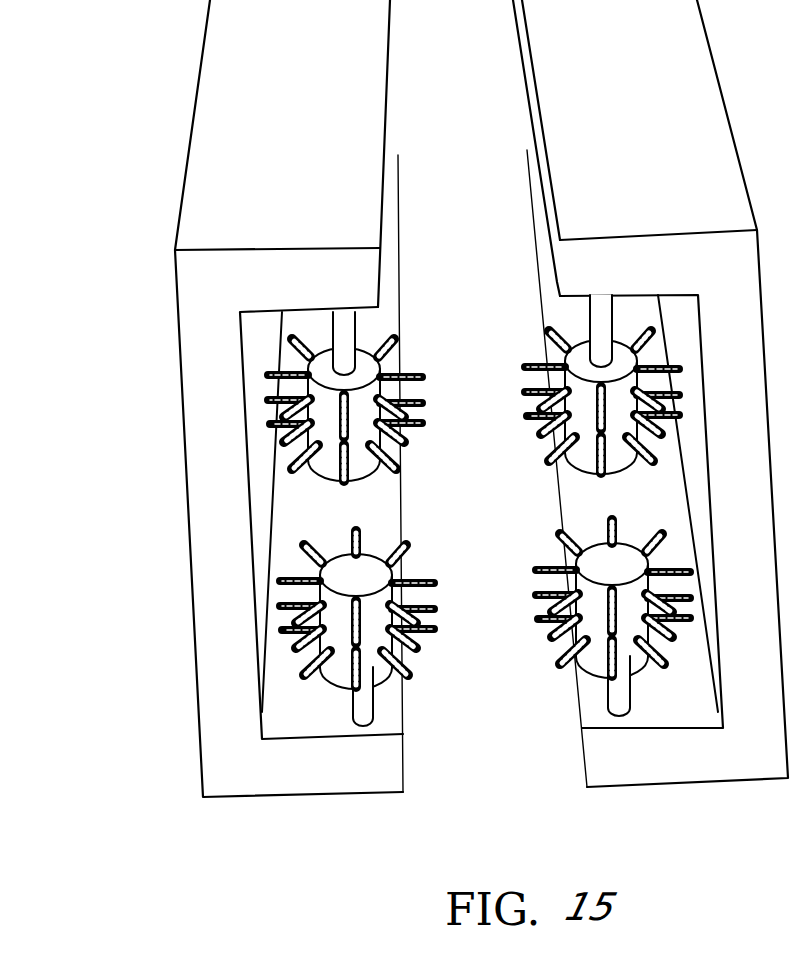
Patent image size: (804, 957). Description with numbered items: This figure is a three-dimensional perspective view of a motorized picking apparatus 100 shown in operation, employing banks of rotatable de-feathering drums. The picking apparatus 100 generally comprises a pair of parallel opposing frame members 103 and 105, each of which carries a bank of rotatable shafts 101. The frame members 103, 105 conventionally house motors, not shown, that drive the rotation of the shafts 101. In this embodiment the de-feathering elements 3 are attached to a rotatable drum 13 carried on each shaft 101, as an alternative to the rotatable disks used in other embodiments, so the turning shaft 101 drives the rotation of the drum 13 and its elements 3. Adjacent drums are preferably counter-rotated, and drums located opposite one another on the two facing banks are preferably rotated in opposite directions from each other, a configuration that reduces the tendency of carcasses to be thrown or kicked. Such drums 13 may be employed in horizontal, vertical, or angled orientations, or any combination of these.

The picking apparatus 100 is at (140, 697).
The frame member 105 is at (240, 290).
The frame member 103 is at (717, 268).
The rotatable drum 13 is at (357, 349).
The rotatable shaft 101 is at (345, 328).
The de-feathering element 3 is at (403, 433).